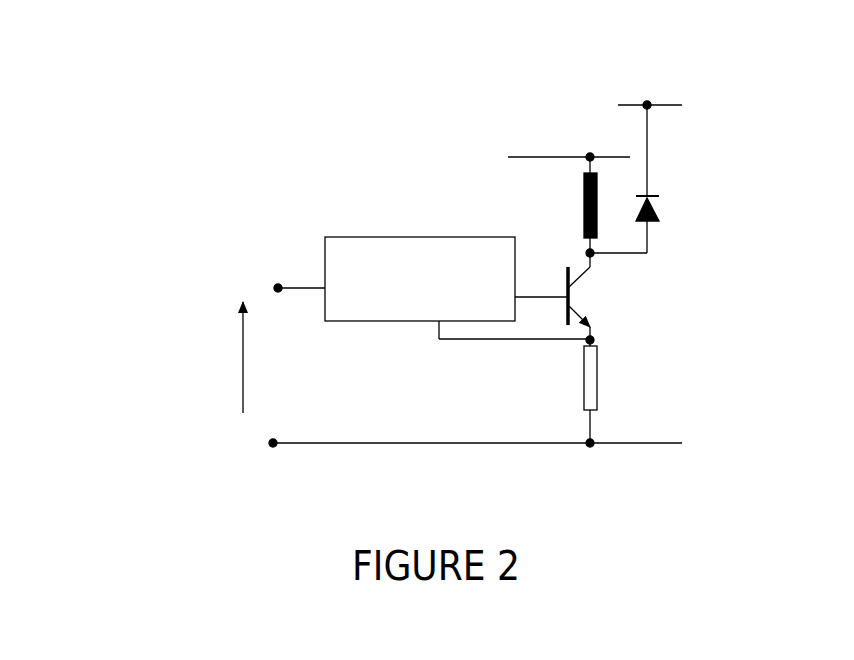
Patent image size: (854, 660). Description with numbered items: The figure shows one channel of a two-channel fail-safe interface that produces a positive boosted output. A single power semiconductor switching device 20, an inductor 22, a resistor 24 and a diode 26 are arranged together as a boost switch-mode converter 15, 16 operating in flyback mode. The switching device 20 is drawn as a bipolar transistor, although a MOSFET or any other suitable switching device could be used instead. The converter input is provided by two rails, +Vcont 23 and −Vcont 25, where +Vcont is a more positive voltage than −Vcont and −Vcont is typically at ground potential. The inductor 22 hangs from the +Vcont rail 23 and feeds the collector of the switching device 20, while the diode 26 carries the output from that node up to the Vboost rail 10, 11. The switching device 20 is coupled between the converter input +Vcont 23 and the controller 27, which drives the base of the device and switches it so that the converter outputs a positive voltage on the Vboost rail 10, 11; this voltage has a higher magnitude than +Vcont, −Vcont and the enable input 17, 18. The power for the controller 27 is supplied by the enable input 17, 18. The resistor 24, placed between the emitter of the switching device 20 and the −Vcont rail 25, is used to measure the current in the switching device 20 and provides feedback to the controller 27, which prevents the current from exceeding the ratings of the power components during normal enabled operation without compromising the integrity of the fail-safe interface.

The Vboost rail 10 is at (648, 129).
The Vboost rail 11 is at (648, 129).
The boost switch-mode converter 15 is at (182, 133).
The boost switch-mode converter 16 is at (317, 160).
The enable input 17 is at (187, 357).
The enable input 18 is at (187, 357).
The power semiconductor switching device 20 is at (603, 298).
The inductor 22 is at (564, 207).
The +Vcont rail 23 is at (569, 139).
The resistor 24 is at (616, 391).
The −Vcont rail 25 is at (475, 422).
The diode 26 is at (649, 221).
The controller 27 is at (432, 287).